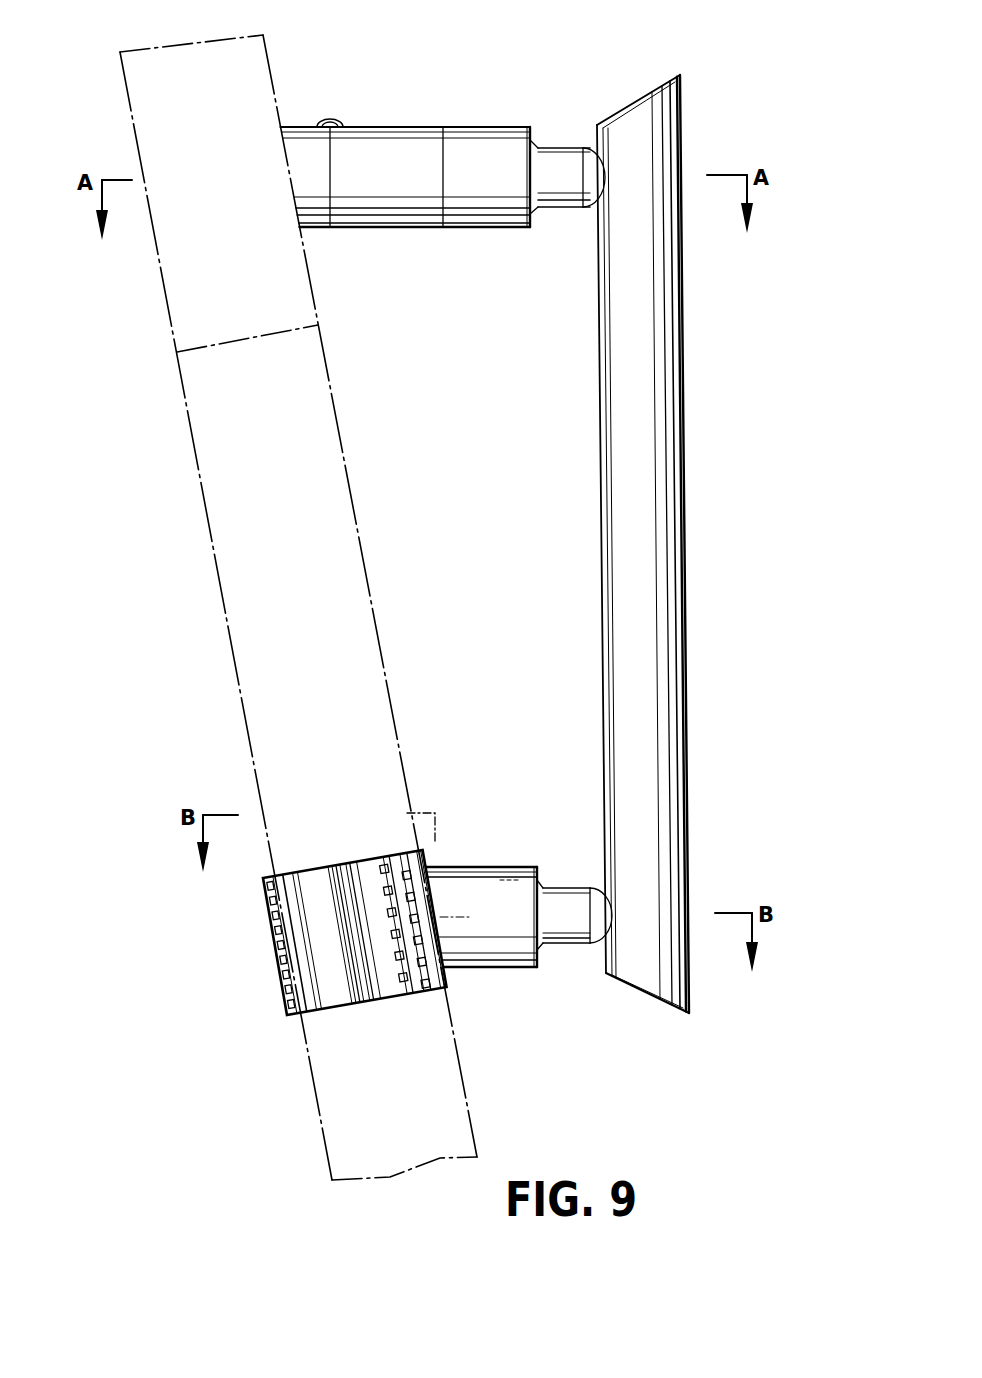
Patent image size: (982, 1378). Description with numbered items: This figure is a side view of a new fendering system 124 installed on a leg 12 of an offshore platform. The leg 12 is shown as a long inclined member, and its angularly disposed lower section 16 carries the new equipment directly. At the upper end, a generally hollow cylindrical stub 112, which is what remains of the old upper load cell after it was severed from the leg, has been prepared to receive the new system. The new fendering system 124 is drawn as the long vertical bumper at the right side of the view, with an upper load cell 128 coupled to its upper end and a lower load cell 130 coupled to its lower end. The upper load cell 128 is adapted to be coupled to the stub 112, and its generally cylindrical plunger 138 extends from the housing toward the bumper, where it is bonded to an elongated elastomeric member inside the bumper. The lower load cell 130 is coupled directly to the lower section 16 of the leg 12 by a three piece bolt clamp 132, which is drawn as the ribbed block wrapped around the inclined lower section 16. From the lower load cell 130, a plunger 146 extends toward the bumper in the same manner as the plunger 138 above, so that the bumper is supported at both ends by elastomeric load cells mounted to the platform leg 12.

The leg 12 is at (228, 645).
The lower section 16 is at (323, 1045).
The stub 112 is at (297, 137).
The new fendering system 124 is at (702, 407).
The upper load cell 128 is at (395, 212).
The lower load cell 130 is at (520, 883).
The three piece bolt clamp 132 is at (270, 920).
The plunger 138 is at (558, 207).
The plunger 146 is at (567, 947).